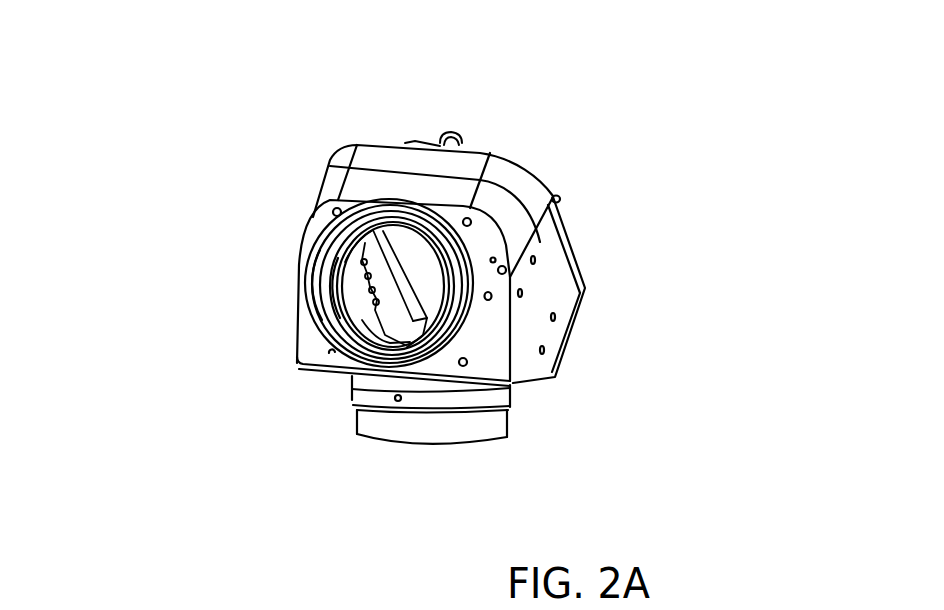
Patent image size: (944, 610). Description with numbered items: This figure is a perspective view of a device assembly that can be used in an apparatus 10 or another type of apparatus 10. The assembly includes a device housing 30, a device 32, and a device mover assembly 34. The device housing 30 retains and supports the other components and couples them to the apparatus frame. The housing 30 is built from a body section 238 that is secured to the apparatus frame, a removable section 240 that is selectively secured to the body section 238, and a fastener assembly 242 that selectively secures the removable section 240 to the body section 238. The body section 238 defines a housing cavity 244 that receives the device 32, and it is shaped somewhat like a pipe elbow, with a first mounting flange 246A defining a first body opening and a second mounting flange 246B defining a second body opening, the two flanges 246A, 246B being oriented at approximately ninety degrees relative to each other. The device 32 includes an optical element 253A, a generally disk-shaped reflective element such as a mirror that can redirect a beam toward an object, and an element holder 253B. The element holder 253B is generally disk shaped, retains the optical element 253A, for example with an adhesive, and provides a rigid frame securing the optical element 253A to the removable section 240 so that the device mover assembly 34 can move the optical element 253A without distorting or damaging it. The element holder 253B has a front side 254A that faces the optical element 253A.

The apparatus 10 is at (658, 110).
The device housing 30 is at (757, 245).
The device 32 is at (100, 323).
The device mover assembly 34 is at (450, 131).
The body section 238 is at (565, 330).
The removable section 240 is at (582, 286).
The fastener assembly 242 is at (562, 202).
The housing cavity 244 is at (381, 341).
The first mounting flange 246A is at (325, 243).
The second mounting flange 246B is at (499, 424).
The optical element 253A is at (417, 303).
The element holder 253B is at (413, 300).
The front side 254A is at (327, 231).